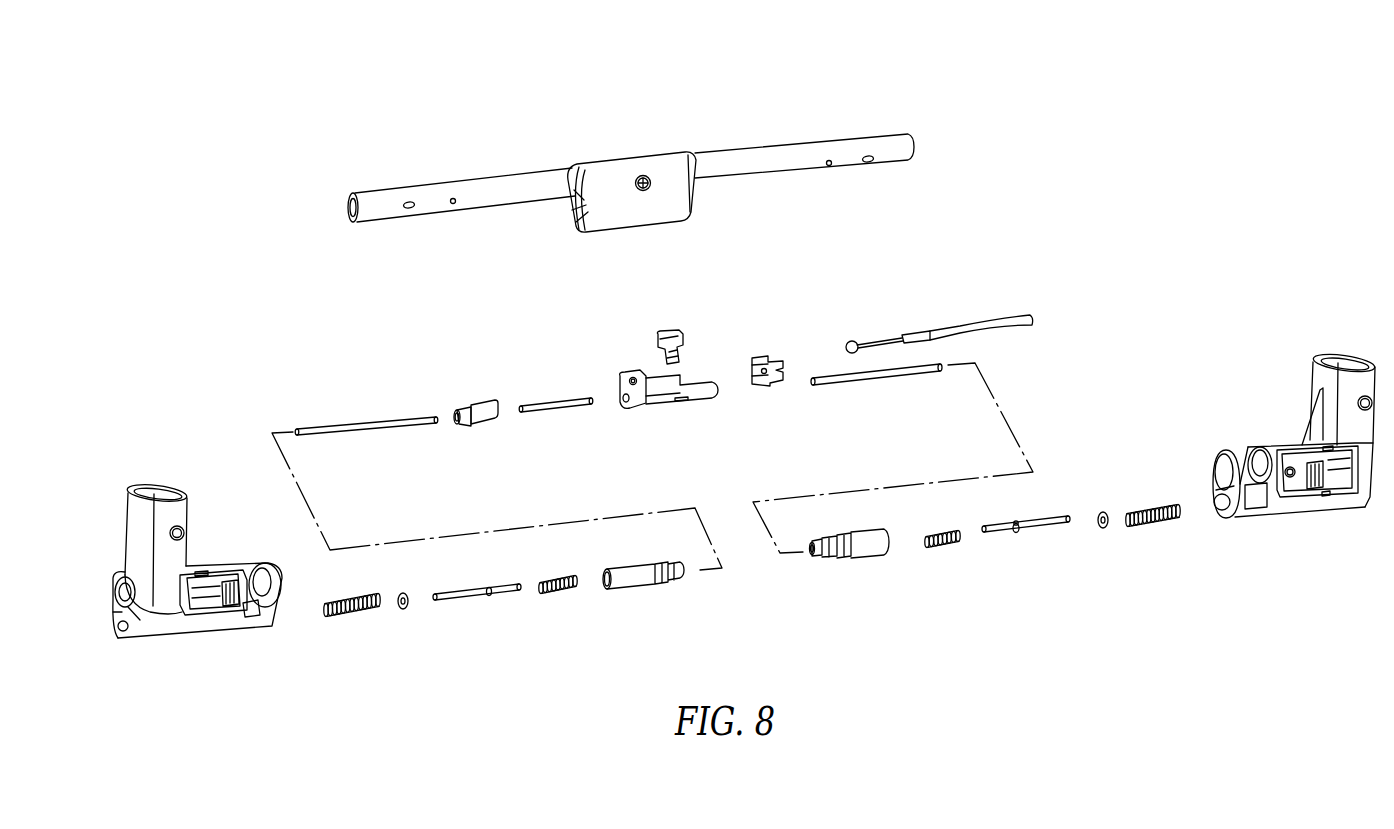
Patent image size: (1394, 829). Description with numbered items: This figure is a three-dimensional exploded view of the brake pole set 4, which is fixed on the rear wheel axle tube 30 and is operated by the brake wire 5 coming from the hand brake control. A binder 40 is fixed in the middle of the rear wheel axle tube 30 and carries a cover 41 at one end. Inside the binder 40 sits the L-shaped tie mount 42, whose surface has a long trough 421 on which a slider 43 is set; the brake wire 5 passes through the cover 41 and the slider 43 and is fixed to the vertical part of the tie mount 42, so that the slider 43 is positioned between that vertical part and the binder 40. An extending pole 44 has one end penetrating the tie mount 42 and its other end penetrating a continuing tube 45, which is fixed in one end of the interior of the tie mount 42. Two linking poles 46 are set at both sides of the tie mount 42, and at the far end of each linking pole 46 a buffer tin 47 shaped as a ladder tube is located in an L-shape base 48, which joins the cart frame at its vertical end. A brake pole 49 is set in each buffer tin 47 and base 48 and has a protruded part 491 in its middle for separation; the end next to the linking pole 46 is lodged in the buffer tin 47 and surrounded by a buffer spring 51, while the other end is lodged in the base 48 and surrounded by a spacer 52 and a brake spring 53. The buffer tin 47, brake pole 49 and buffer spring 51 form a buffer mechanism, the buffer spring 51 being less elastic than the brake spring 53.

The brake pole set 4 is at (267, 370).
The brake wire 5 is at (955, 333).
The rear wheel axle tube 30 is at (738, 163).
The binder 40 is at (617, 165).
The cover 41 is at (758, 355).
The tie mount 42 is at (673, 430).
The long trough 421 is at (678, 400).
The slider 43 is at (670, 337).
The extending pole 44 is at (550, 400).
The continuing tube 45 is at (480, 420).
The linking pole 46 is at (348, 424).
The buffer tin 47 is at (632, 580).
The L-shape base 48 is at (188, 625).
The brake pole 49 is at (751, 608).
The protruded part 491 is at (490, 595).
The buffer spring 51 is at (560, 591).
The spacer 52 is at (406, 608).
The brake spring 53 is at (350, 612).